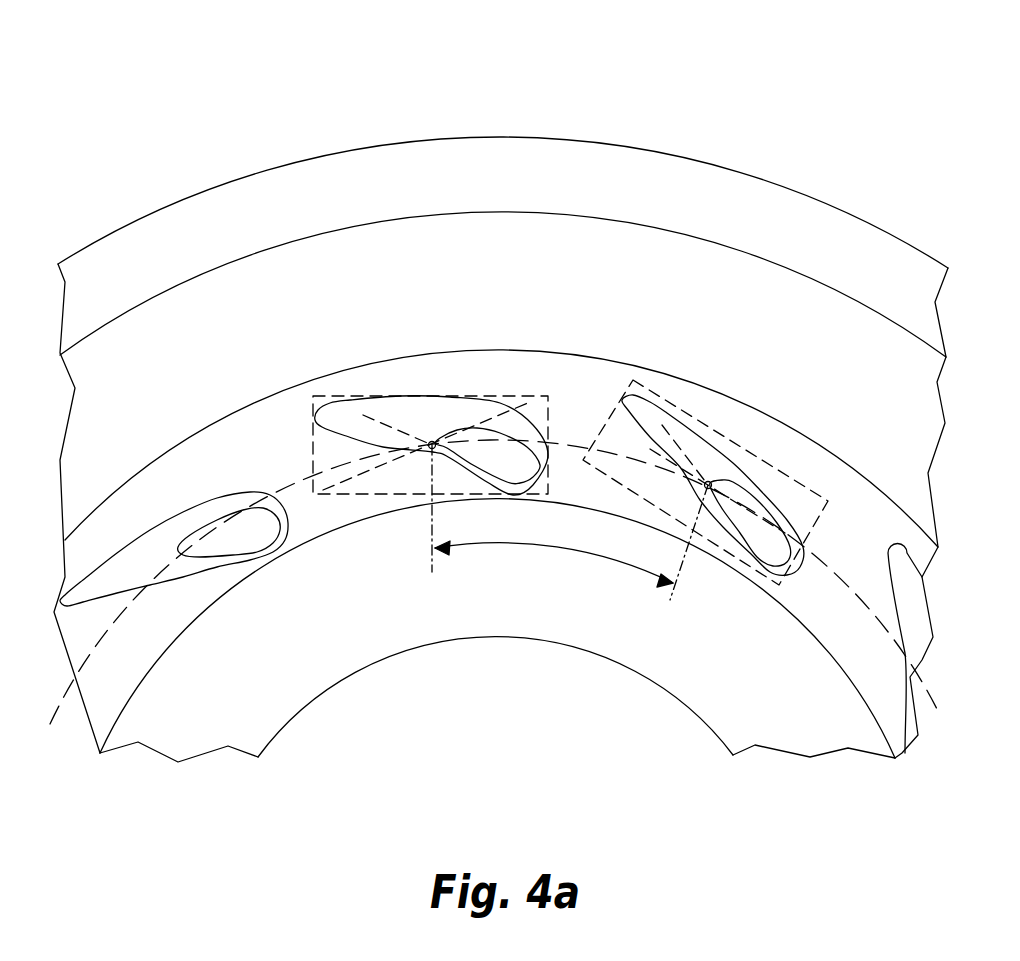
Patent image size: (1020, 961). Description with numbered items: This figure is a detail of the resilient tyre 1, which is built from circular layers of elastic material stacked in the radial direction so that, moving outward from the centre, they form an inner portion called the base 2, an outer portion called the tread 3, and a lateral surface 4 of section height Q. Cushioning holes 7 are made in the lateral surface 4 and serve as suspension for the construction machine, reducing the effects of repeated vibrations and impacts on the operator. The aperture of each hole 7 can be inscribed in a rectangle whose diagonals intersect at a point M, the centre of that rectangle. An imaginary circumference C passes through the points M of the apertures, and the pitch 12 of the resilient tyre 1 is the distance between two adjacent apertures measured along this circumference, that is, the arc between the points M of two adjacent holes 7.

The resilient tyre 1 is at (272, 120).
The base 2 is at (335, 653).
The tread 3 is at (590, 168).
The lateral surface 4 is at (132, 407).
The cushioning hole 7 is at (330, 407).
The pitch 12 is at (552, 550).
The point M is at (432, 445).
The imaginary circumference C is at (55, 713).